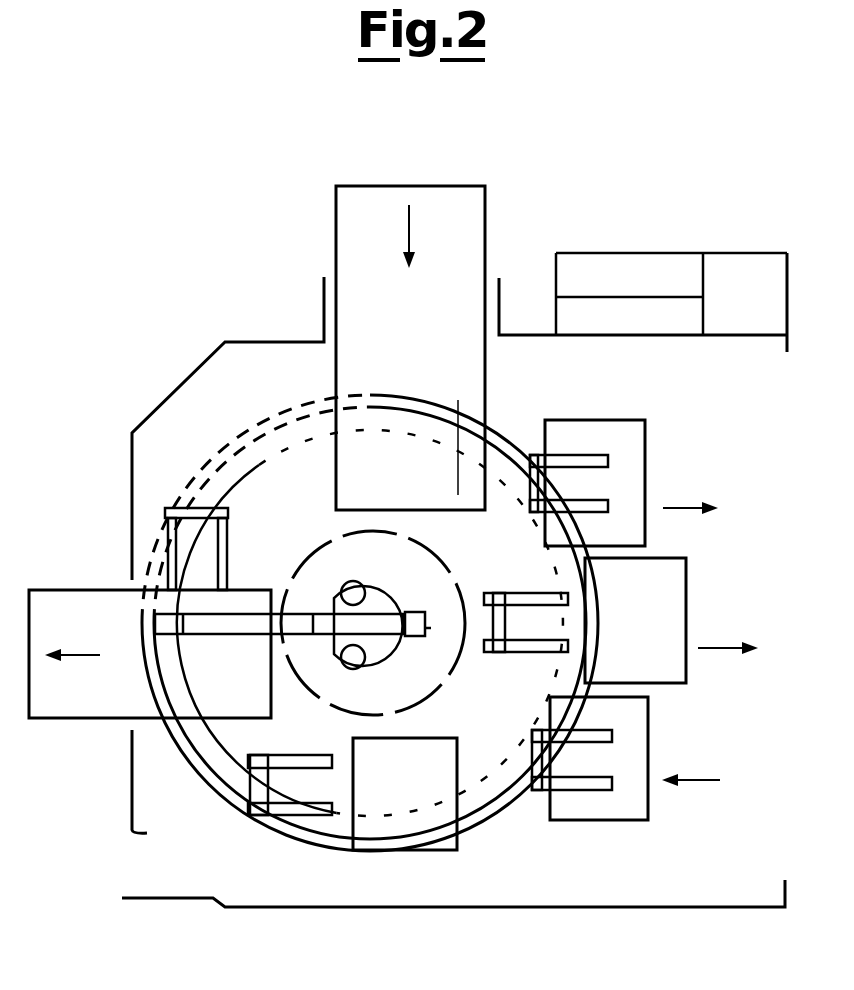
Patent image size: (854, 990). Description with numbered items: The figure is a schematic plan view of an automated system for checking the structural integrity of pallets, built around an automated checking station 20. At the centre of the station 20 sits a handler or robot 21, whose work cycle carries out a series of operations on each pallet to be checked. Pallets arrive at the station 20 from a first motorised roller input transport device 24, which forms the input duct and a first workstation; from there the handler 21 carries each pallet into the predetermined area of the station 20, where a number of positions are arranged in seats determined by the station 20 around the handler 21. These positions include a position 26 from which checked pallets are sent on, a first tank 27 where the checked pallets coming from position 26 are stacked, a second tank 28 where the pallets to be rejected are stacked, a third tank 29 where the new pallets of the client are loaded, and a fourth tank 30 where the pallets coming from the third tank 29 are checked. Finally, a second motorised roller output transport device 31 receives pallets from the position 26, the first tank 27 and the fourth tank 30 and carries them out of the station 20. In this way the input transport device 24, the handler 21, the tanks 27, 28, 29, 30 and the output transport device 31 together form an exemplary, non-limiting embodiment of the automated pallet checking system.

The checking station 20 is at (620, 880).
The handler or robot 21 is at (327, 656).
The input transport device 24 is at (453, 357).
The position 26 is at (470, 483).
The first tank 27 is at (630, 525).
The second tank 28 is at (655, 618).
The third tank 29 is at (628, 755).
The fourth tank 30 is at (398, 830).
The output transport device 31 is at (220, 688).